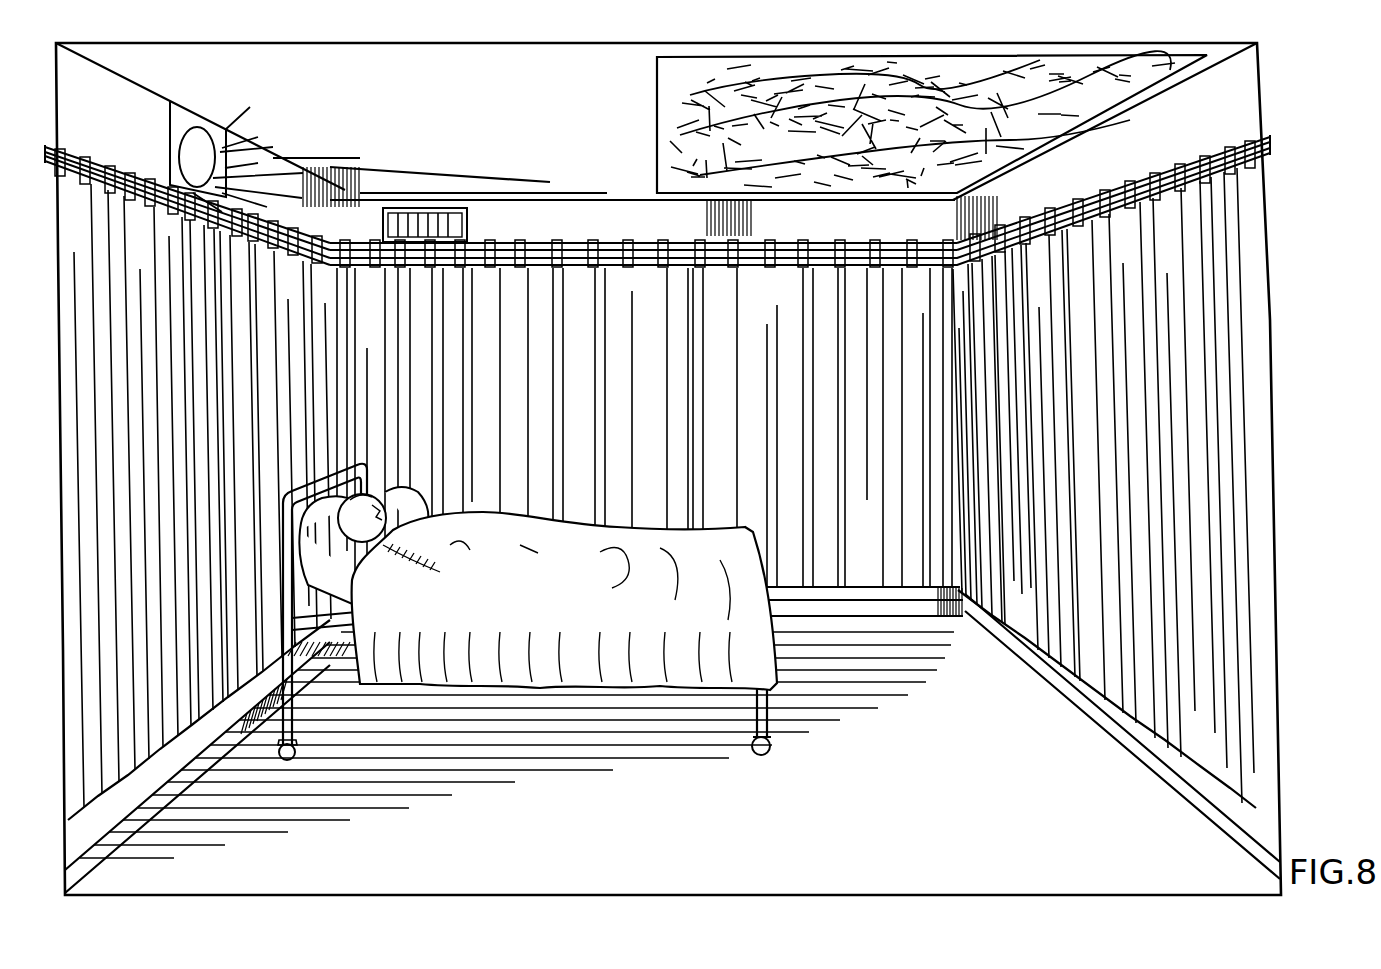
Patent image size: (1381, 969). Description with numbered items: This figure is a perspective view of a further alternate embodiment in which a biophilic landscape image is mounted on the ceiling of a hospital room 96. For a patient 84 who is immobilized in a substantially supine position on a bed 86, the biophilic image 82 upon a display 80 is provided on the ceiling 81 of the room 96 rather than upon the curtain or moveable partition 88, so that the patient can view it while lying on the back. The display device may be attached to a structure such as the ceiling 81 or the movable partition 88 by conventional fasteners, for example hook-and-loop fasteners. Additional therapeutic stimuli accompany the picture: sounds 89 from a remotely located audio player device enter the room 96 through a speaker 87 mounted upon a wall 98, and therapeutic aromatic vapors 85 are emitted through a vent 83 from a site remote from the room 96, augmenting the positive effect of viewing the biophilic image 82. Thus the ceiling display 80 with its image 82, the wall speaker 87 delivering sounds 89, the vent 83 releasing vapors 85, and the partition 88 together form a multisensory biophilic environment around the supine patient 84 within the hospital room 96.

The display 80 is at (660, 168).
The ceiling 81 is at (350, 97).
The biophilic image 82 is at (665, 112).
The vent 83 is at (468, 228).
The patient 84 is at (538, 588).
The aromatic vapors 85 is at (430, 214).
The bed 86 is at (757, 745).
The speaker 87 is at (173, 145).
The curtain or moveable partition 88 is at (1107, 387).
The sounds 89 is at (223, 122).
The hospital room 96 is at (556, 735).
The wall 98 is at (392, 214).